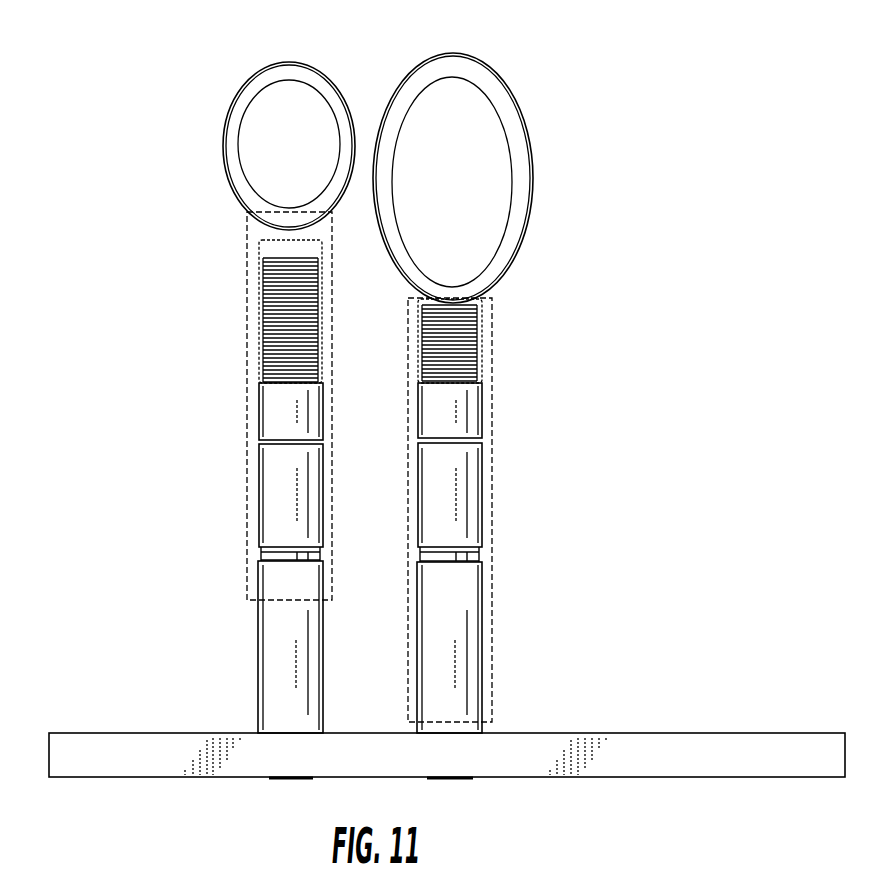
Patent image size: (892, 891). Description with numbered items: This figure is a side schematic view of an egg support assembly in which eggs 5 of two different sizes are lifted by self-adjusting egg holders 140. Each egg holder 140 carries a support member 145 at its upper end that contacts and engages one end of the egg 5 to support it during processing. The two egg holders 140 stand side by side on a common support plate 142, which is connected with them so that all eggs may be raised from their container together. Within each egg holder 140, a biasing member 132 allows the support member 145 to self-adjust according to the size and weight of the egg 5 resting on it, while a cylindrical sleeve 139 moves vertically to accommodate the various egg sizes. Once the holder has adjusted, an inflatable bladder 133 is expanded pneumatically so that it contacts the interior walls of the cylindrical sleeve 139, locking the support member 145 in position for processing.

The egg 5 is at (407, 103).
The biasing member 132 is at (278, 297).
The inflatable bladder 133 is at (278, 486).
The cylindrical sleeve 139 is at (255, 547).
The egg holder 140 is at (178, 450).
The support plate 142 is at (655, 733).
The support member 145 is at (492, 307).